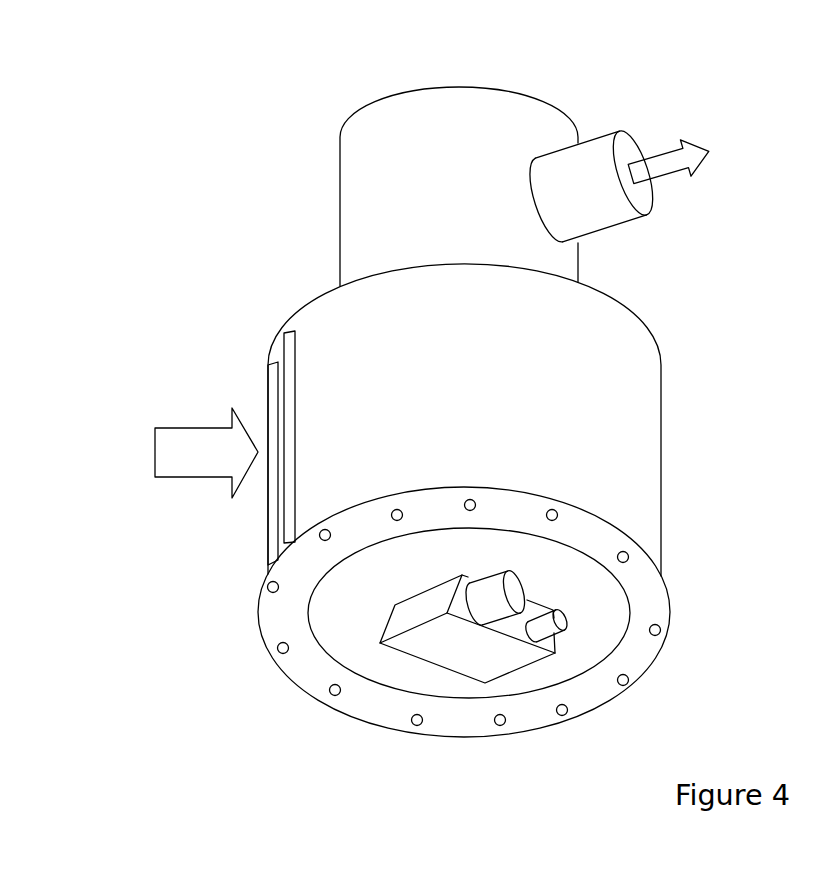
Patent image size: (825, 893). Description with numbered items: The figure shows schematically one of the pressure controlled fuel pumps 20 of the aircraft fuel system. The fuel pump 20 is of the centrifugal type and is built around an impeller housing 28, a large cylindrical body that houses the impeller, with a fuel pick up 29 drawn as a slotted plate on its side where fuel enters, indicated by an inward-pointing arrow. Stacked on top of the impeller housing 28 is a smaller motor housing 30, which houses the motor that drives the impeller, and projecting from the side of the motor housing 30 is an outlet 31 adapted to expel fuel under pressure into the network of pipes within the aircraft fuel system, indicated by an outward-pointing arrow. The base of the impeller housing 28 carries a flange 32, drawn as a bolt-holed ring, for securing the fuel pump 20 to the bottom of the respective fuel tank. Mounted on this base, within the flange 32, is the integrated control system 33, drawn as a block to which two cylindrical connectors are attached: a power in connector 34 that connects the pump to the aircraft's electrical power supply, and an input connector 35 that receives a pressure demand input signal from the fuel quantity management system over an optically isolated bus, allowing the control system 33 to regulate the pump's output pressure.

The pressure controlled fuel pump 20 is at (218, 171).
The impeller housing 28 is at (638, 398).
The fuel pick up 29 is at (277, 530).
The motor housing 30 is at (350, 128).
The outlet 31 is at (587, 150).
The flange 32 is at (655, 593).
The integrated control system 33 is at (453, 643).
The power in connector 34 is at (495, 593).
The input connector 35 is at (550, 628).